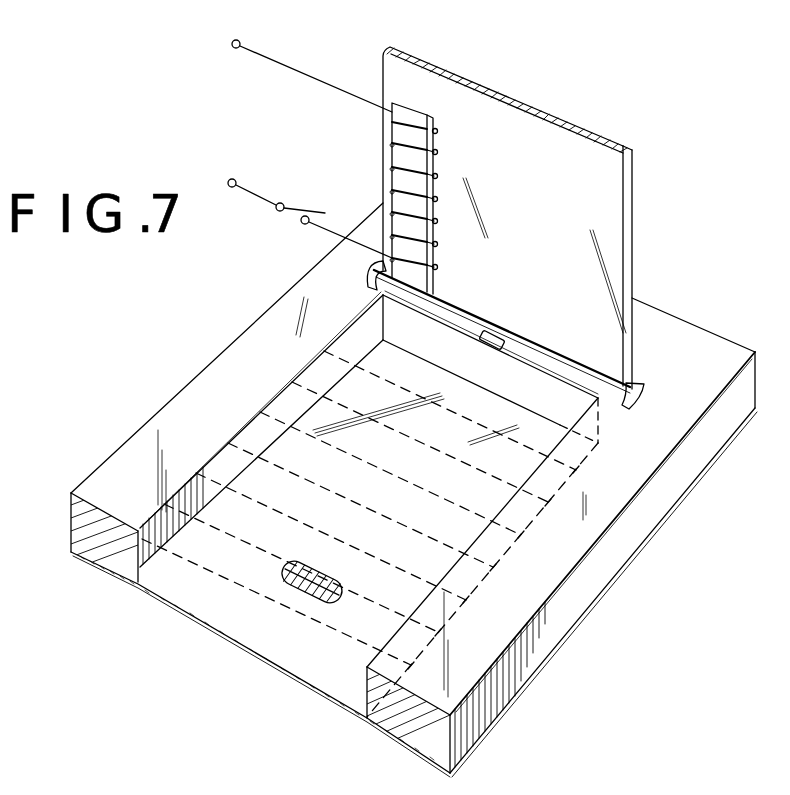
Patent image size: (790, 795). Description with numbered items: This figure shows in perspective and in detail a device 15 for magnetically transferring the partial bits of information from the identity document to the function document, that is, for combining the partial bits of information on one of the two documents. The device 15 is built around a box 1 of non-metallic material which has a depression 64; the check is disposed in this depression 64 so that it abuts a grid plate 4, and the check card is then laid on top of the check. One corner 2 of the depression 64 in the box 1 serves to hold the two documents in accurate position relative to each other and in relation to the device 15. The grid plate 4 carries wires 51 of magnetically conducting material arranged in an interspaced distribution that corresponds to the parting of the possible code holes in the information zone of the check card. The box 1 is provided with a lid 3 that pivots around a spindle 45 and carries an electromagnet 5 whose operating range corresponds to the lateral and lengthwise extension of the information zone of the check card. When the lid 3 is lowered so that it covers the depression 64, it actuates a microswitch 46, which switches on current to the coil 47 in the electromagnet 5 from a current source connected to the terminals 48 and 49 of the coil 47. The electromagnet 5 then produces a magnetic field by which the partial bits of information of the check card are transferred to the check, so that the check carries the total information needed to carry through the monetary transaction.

The box 1 is at (176, 403).
The corner 2 is at (390, 325).
The lid 3 is at (613, 194).
The grid plate 4 is at (261, 650).
The electromagnet 5 is at (398, 181).
The device 15 is at (228, 330).
The spindle 45 is at (590, 365).
The microswitch 46 is at (495, 332).
The coil 47 is at (410, 127).
The terminal 48 is at (251, 27).
The terminal 49 is at (244, 160).
The wires 51 is at (282, 572).
The depression 64 is at (268, 436).